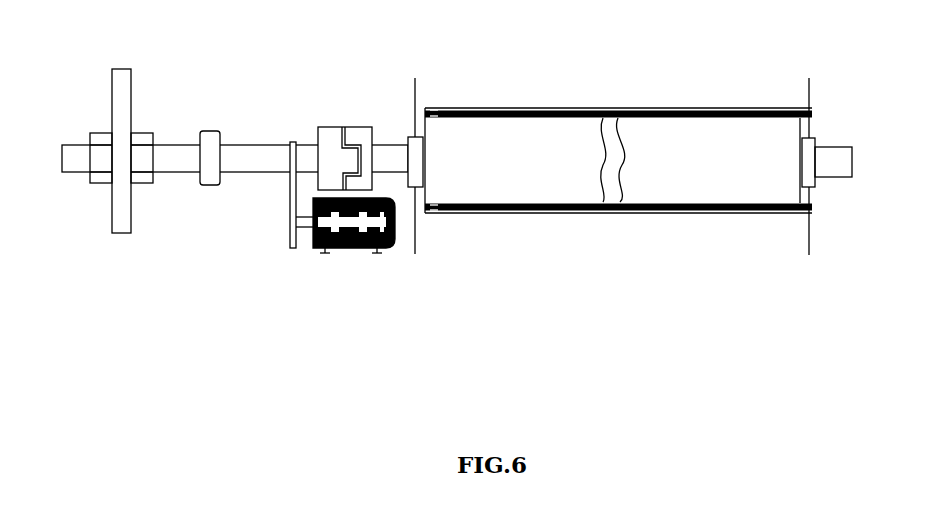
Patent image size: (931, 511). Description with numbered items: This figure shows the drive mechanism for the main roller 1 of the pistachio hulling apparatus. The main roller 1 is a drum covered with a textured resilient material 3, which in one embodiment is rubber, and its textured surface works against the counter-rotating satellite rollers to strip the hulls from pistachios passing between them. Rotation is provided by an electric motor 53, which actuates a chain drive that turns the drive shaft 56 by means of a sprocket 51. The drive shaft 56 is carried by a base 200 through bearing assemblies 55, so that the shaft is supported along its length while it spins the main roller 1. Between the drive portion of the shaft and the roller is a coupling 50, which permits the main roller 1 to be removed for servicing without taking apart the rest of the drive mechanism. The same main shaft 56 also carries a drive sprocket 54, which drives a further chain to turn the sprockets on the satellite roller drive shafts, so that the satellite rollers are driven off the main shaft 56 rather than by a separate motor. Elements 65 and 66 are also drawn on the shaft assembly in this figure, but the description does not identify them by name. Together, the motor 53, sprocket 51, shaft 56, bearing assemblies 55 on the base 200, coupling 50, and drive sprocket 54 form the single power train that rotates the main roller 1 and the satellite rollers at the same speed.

The main roller 1 is at (586, 131).
The textured resilient material 3 is at (618, 129).
The coupling 50 is at (344, 125).
The sprocket 51 is at (264, 195).
The electric motor 53 is at (379, 247).
The drive sprocket 54 is at (180, 197).
The bearing assemblies 55 is at (162, 126).
The drive shaft 56 is at (220, 129).
The hub nut 65 is at (81, 186).
The motor shaft 66 is at (267, 225).
The base 200 is at (158, 126).